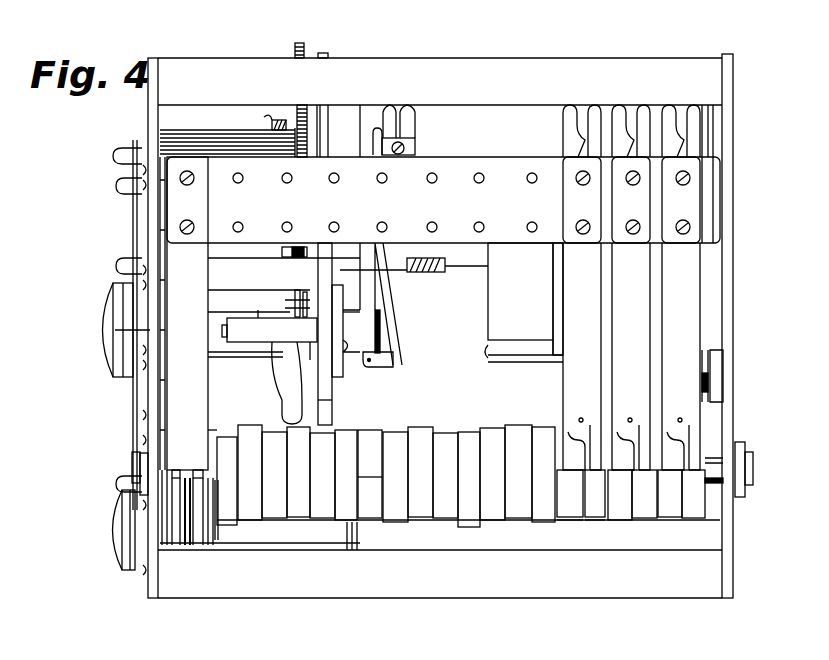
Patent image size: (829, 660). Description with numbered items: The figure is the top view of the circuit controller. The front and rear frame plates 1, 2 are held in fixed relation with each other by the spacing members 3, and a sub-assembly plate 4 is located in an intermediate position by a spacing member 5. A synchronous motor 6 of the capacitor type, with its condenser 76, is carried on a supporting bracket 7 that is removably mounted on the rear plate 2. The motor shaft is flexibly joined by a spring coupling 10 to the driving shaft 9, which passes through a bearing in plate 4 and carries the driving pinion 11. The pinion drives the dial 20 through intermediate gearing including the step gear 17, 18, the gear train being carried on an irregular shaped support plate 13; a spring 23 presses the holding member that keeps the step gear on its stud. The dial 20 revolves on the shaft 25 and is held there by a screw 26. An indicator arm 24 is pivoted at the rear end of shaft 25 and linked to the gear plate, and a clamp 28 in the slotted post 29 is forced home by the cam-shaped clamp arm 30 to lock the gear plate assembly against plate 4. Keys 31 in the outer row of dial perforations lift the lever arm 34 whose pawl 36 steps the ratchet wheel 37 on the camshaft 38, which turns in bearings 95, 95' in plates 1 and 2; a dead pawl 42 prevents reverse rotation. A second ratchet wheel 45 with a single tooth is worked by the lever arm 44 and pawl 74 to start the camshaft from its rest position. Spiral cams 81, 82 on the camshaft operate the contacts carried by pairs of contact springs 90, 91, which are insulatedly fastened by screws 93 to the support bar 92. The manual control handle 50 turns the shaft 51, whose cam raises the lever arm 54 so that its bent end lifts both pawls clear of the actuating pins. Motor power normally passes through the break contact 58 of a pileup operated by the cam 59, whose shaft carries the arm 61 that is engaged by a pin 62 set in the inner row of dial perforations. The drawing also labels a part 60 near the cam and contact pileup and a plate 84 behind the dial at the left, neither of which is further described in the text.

The front frame plate 1 is at (148, 100).
The rear frame plate 2 is at (733, 138).
The spacing members 3 is at (572, 58).
The sub-assembly plate 4 is at (329, 148).
The spacing member 5 is at (160, 58).
The motor 6 is at (488, 318).
The supporting bracket 7 is at (553, 303).
The driving shaft 9 is at (350, 282).
The spring coupling 10 is at (432, 274).
The driving pinion 11 is at (282, 259).
The support plate 13 is at (329, 118).
The step gear 17 is at (306, 52).
The step gear 18 is at (195, 133).
The dial 20 is at (133, 430).
The spring 23 is at (263, 118).
The indicator arm 24 is at (260, 344).
The shaft 25 is at (247, 360).
The screw 26 is at (113, 370).
The clamp 28 is at (297, 290).
The slotted post 29 is at (306, 291).
The clamp arm 30 is at (283, 392).
The keys 31 is at (118, 186).
The lever arm 34 is at (190, 547).
The pawl 36 is at (170, 548).
The ratchet wheel 37 is at (176, 470).
The camshaft 38 is at (714, 486).
The dead pawl 42 is at (222, 418).
The lever arm 44 is at (213, 547).
The ratchet wheel 45 is at (198, 470).
The manual control handle 50 is at (126, 573).
The shaft 51 is at (290, 551).
The lever arm 54 is at (359, 535).
The break contact 58 is at (400, 357).
The cam 59 is at (351, 358).
The cam 60 is at (385, 346).
The arm 61 is at (225, 340).
The pin 62 is at (124, 260).
The pawl 74 is at (218, 537).
The condenser 76 is at (608, 150).
The spiral cam 81 is at (570, 521).
The spiral cam 82 is at (600, 521).
The side plate 84 is at (182, 372).
The contact spring 90 is at (572, 125).
The contact spring 91 is at (565, 148).
The support bar 92 is at (462, 157).
The screws 93 is at (575, 223).
The bearing 95 is at (111, 476).
The bearing 95' is at (767, 469).